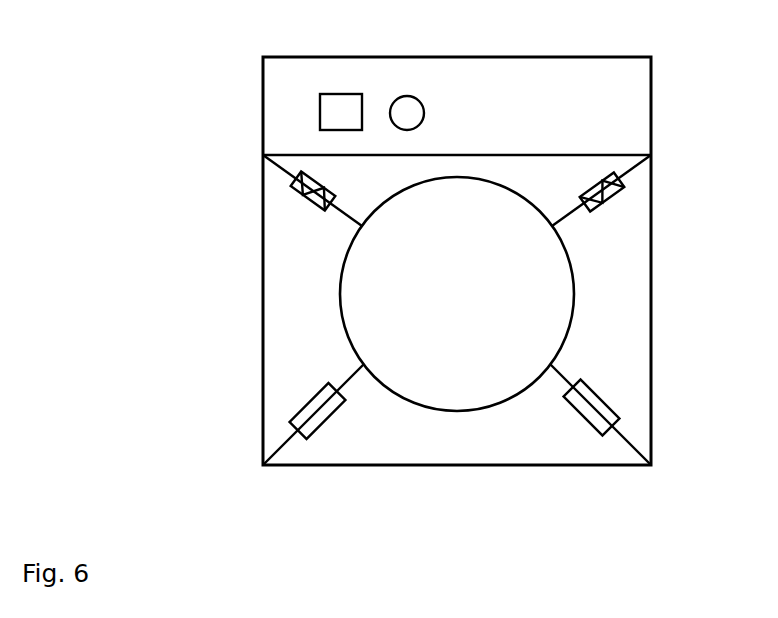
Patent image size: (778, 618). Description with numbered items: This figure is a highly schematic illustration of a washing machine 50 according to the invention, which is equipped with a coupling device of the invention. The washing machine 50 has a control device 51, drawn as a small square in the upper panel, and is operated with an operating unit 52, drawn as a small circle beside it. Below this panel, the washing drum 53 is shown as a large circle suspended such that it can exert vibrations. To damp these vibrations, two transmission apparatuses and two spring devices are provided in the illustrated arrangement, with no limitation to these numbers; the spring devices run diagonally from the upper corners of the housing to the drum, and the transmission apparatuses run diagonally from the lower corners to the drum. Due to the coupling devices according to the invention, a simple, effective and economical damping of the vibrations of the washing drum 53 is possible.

The washing machine 50 is at (658, 70).
The control device 51 is at (337, 88).
The operating unit 52 is at (418, 95).
The washing drum 53 is at (553, 307).